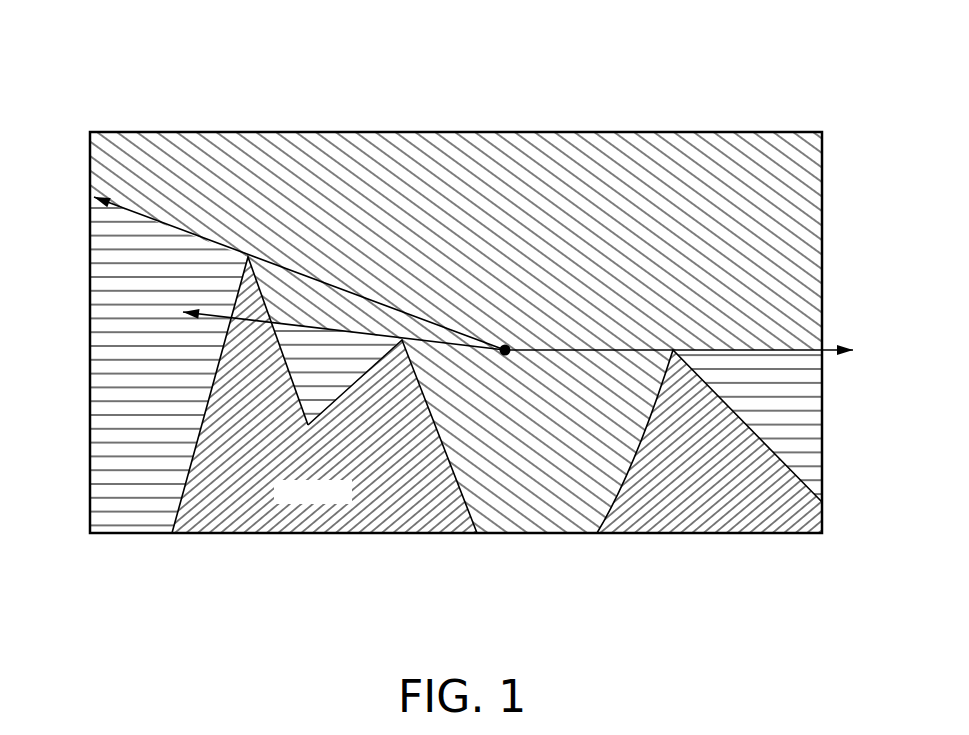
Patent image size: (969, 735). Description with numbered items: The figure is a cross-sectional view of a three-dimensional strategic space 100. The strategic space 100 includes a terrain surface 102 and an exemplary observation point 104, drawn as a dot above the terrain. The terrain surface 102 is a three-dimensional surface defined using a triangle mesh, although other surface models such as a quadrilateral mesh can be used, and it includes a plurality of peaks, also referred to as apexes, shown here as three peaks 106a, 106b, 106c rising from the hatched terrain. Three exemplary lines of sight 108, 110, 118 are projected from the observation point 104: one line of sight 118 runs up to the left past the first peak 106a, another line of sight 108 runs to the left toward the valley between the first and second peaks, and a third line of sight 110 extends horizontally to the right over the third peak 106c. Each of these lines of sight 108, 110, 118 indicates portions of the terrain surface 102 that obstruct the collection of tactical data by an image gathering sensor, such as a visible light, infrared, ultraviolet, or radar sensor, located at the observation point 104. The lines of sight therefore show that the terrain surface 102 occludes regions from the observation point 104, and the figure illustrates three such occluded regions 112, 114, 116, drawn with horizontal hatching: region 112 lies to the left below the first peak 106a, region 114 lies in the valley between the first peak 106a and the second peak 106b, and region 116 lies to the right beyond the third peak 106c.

The three-dimensional strategic space 100 is at (456, 271).
The terrain surface 102 is at (445, 453).
The observation point 104 is at (505, 350).
The peak 106a is at (248, 257).
The peak 106b is at (402, 340).
The peak 106c is at (673, 350).
The line of sight 108 is at (197, 310).
The line of sight 110 is at (843, 349).
The occluded region 112 is at (102, 313).
The occluded region 114 is at (323, 352).
The occluded region 116 is at (808, 403).
The line of sight 118 is at (92, 210).